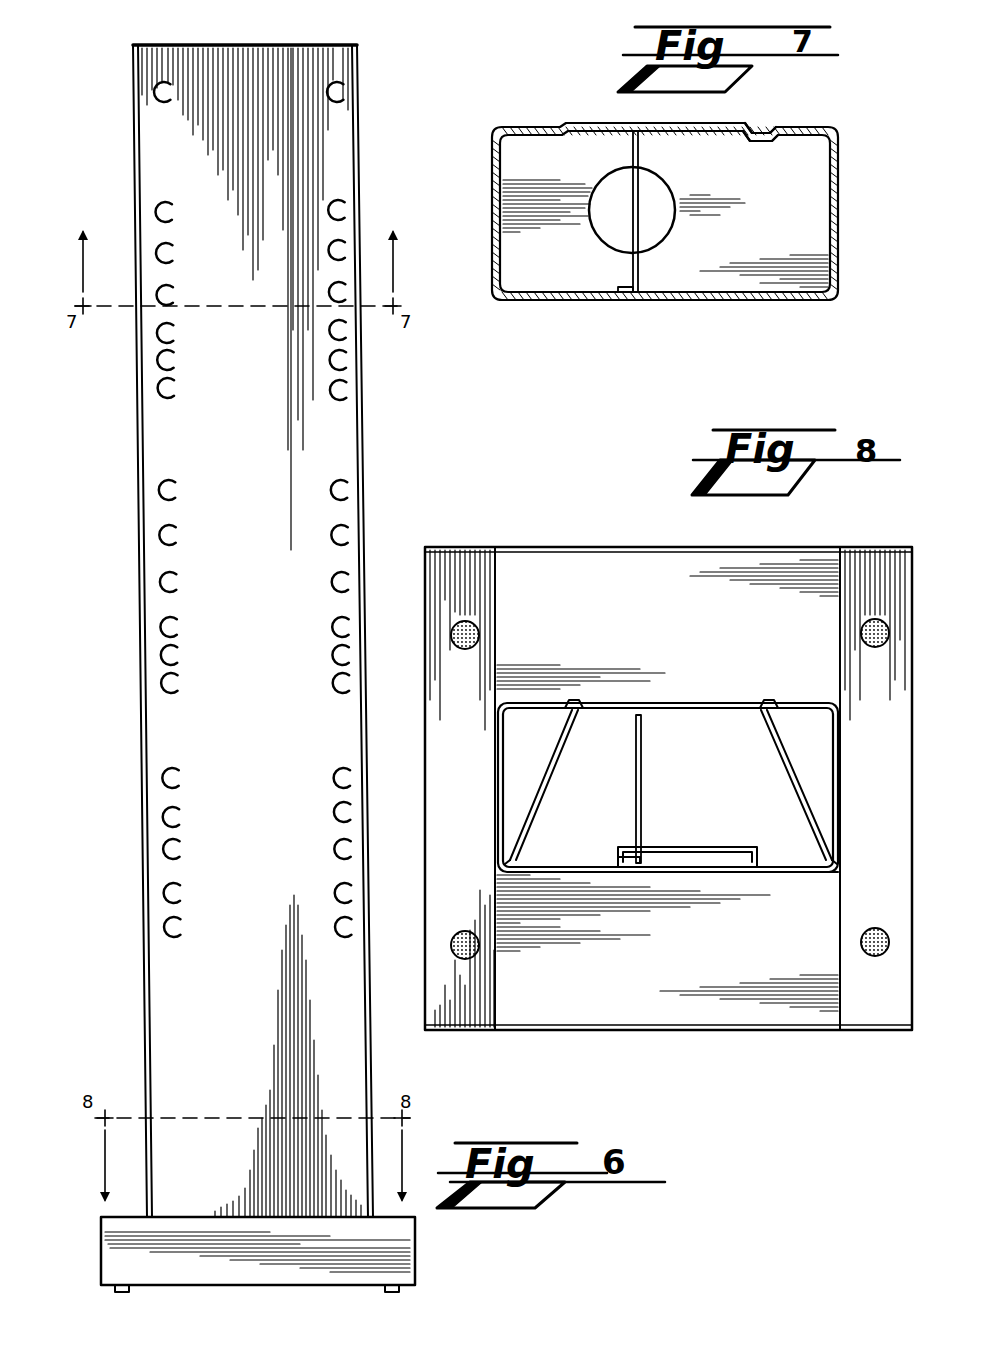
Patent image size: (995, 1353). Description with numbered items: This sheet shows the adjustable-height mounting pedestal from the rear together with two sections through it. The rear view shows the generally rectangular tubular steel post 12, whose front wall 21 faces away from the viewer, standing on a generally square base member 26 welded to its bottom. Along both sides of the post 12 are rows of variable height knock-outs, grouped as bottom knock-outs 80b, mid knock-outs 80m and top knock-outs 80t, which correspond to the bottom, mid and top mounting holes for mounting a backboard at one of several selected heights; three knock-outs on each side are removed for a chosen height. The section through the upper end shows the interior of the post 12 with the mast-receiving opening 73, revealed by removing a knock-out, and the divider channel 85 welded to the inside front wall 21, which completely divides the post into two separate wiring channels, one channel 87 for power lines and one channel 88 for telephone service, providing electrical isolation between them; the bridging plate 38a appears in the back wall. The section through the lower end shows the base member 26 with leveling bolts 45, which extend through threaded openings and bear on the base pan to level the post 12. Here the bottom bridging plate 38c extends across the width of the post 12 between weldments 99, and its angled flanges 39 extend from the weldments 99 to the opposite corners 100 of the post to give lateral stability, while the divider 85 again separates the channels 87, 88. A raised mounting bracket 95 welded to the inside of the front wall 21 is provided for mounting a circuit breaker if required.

In FIG. 6, the post 12 is at (140, 883).
In FIG. 7, the post 12 is at (790, 300).
In FIG. 8, the post 12 is at (808, 876).
In FIG. 6, the front wall 21 is at (270, 800).
In FIG. 8, the base member 26 is at (578, 572).
In FIG. 7, the bridging plate 38a is at (740, 126).
In FIG. 8, the bottom bridging plate 38c is at (738, 702).
In FIG. 8, the angled flanges 39 is at (540, 797).
In FIG. 8, the leveling bolts 45 is at (877, 649).
In FIG. 7, the mast-receiving opening 73 is at (618, 166).
In FIG. 6, the top knock-outs 80t is at (158, 96).
In FIG. 6, the mid knock-outs 80m is at (163, 683).
In FIG. 6, the bottom knock-outs 80b is at (350, 537).
In FIG. 7, the divider channel 85 is at (641, 280).
In FIG. 8, the divider channel 85 is at (643, 733).
In FIG. 7, the power line channel 87 is at (587, 268).
In FIG. 8, the power line channel 87 is at (607, 727).
In FIG. 7, the telephone service channel 88 is at (794, 212).
In FIG. 8, the telephone service channel 88 is at (704, 733).
In FIG. 8, the raised mounting bracket 95 is at (710, 847).
In FIG. 8, the weldments 99 is at (572, 702).
In FIG. 8, the opposite corners 100 is at (522, 856).